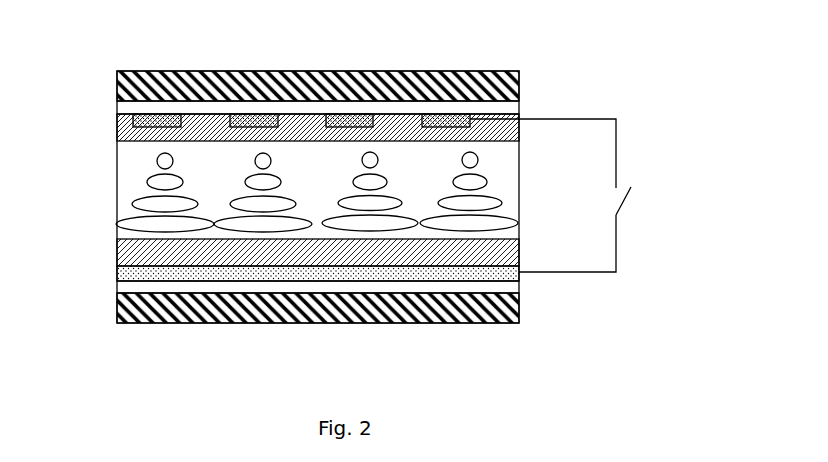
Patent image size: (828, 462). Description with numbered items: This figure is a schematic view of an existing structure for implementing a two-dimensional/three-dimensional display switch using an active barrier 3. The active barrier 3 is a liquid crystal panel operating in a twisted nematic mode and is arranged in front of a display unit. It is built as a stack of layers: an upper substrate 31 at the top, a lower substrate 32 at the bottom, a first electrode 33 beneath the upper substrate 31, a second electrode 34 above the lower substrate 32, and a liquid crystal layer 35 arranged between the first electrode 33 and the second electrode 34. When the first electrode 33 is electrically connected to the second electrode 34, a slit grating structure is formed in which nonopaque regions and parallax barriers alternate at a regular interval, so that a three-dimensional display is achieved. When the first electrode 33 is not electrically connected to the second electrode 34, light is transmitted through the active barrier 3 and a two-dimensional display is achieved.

The active barrier 3 is at (541, 86).
The upper substrate 31 is at (117, 87).
The lower substrate 32 is at (117, 309).
The first electrode 33 is at (117, 128).
The second electrode 34 is at (117, 273).
The liquid crystal layer 35 is at (127, 195).